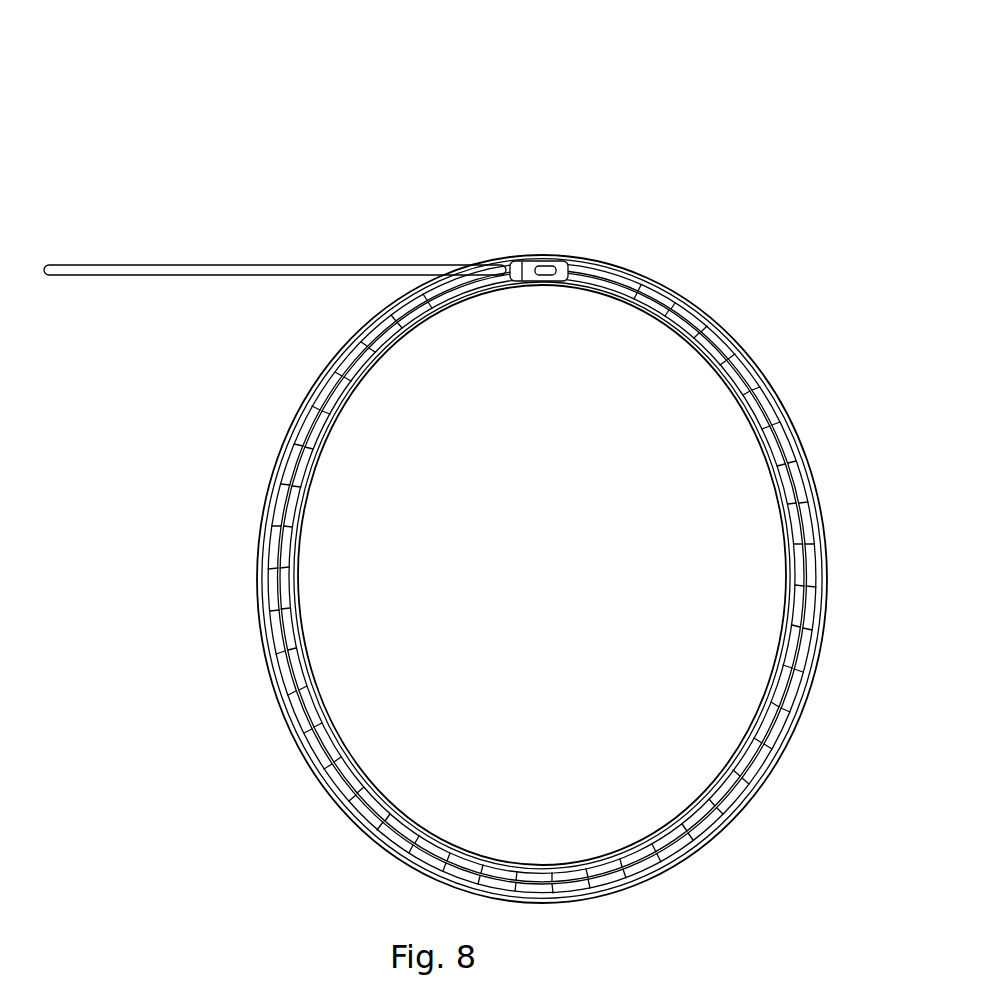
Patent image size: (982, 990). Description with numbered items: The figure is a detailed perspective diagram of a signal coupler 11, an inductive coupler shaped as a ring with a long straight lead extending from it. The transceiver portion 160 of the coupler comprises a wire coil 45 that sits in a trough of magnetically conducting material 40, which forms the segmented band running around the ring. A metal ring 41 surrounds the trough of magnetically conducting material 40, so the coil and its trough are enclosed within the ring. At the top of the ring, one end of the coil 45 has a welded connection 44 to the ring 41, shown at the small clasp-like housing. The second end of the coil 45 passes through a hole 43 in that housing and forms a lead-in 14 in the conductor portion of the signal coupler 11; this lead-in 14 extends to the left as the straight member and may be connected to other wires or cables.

The signal coupler 11 is at (160, 83).
The lead-in 14 is at (236, 275).
The trough of magnetically conducting material 40 is at (713, 834).
The metal ring 41 is at (305, 418).
The hole 43 is at (528, 283).
The welded connection 44 is at (506, 262).
The wire coil 45 is at (748, 360).
The transceiver portion 160 is at (265, 774).